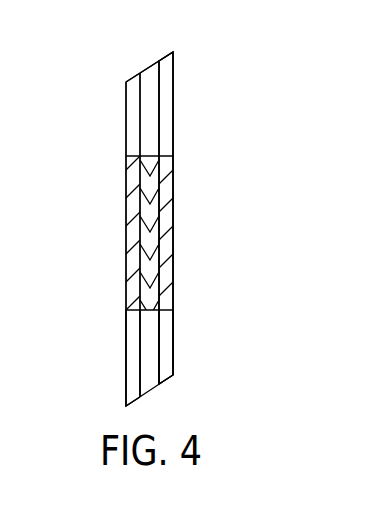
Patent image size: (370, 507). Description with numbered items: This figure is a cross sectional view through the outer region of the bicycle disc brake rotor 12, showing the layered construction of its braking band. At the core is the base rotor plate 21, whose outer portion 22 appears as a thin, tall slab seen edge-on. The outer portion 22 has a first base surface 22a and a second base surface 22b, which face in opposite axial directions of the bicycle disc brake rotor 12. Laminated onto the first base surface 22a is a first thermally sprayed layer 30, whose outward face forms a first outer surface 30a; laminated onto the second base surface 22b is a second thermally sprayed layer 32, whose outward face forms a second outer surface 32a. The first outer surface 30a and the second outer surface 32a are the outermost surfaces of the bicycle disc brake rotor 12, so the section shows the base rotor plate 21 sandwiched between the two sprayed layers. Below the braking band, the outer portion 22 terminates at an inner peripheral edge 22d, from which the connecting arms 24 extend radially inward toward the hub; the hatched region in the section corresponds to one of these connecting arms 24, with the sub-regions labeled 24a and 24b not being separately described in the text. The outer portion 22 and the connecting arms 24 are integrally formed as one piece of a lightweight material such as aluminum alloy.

The bicycle disc brake rotor 12 is at (100, 92).
The base rotor plate 21 is at (146, 61).
The outer portion 22 is at (165, 100).
The first base surface 22a is at (140, 125).
The second base surface 22b is at (160, 135).
The inner peripheral edge 22d is at (150, 330).
The connecting arms 24 is at (163, 200).
The left hatched portion 24a is at (140, 257).
The right hatched portion 24b is at (160, 276).
The first thermally sprayed layer 30 is at (111, 212).
The first outer surface 30a is at (126, 357).
The second thermally sprayed layer 32 is at (177, 240).
The second outer surface 32a is at (175, 352).